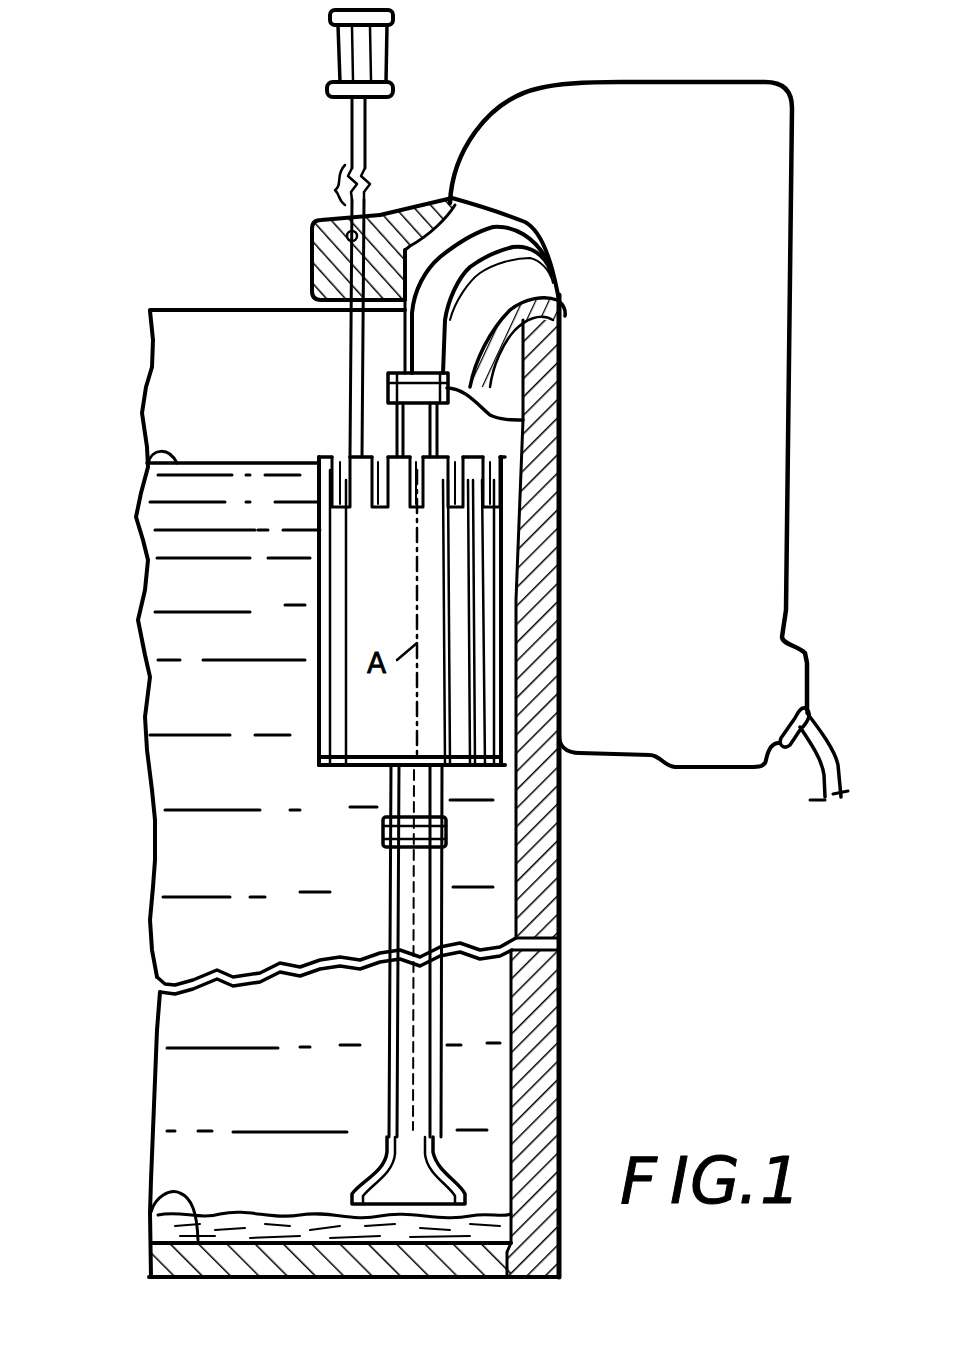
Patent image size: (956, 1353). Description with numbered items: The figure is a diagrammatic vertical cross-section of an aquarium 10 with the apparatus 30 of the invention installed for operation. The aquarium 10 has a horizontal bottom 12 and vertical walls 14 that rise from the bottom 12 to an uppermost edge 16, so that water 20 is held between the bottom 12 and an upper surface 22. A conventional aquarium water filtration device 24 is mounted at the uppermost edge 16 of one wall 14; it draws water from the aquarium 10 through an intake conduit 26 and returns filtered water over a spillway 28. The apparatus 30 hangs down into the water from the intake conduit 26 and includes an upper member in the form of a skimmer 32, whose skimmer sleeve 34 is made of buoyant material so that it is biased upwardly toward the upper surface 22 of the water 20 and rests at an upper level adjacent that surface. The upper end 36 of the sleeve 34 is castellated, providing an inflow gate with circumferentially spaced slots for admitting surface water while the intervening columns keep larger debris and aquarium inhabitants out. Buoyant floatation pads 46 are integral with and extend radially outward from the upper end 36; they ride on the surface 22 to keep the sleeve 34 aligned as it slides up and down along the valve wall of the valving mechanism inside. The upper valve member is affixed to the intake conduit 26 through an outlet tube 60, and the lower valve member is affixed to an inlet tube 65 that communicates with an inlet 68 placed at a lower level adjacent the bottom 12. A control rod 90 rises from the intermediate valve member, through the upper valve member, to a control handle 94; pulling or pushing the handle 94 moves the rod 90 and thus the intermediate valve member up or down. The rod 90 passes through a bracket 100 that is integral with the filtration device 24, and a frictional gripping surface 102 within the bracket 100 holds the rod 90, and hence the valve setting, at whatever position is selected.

The aquarium 10 is at (565, 1106).
The bottom 12 is at (152, 1190).
The walls 14 is at (167, 386).
The uppermost edge 16 is at (165, 307).
The water 20 is at (158, 868).
The upper surface 22 is at (147, 453).
The aquarium water filtration device 24 is at (790, 500).
The intake conduit 26 is at (487, 250).
The spillway 28 is at (565, 408).
The apparatus 30 is at (512, 603).
The skimmer 32 is at (340, 568).
The skimmer sleeve 34 is at (487, 717).
The upper end 36 is at (323, 452).
The floatation pads 46 is at (316, 456).
The outlet tube 60 is at (398, 417).
The inlet tube 65 is at (405, 795).
The inlet 68 is at (372, 1206).
The control rod 90 is at (352, 322).
The control handle 94 is at (353, 50).
The bracket 100 is at (405, 216).
The frictional gripping surface 102 is at (312, 266).